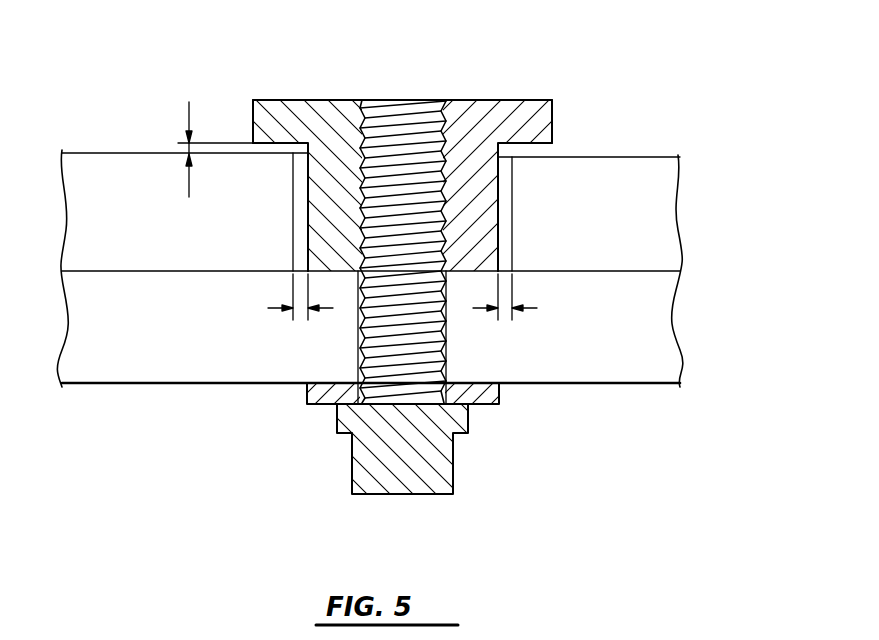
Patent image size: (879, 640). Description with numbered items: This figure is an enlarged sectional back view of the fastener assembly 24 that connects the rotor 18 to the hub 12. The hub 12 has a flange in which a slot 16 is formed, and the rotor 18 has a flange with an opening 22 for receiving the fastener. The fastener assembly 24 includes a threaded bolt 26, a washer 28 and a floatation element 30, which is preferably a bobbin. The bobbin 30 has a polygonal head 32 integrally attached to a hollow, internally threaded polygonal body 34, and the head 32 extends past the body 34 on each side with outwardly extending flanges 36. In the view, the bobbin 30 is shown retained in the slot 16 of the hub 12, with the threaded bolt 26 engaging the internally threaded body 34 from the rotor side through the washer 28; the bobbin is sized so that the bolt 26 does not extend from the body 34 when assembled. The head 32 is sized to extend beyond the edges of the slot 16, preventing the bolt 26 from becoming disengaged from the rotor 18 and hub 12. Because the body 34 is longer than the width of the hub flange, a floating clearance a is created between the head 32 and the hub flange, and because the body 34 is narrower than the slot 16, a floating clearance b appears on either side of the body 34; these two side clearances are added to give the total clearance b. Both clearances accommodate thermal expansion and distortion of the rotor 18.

The hub 12 is at (662, 208).
The slot 16 is at (508, 182).
The rotor 18 is at (636, 352).
The opening 22 is at (440, 352).
The fastener assembly 24 is at (560, 60).
The threaded bolt 26 is at (368, 480).
The washer 28 is at (307, 398).
The floatation element 30 is at (314, 89).
The polygonal head 32 is at (275, 99).
The polygonal body 34 is at (312, 205).
The outwardly extending flange 36 is at (253, 113).
The floating clearance a is at (186, 114).
The floating clearance b is at (262, 308).